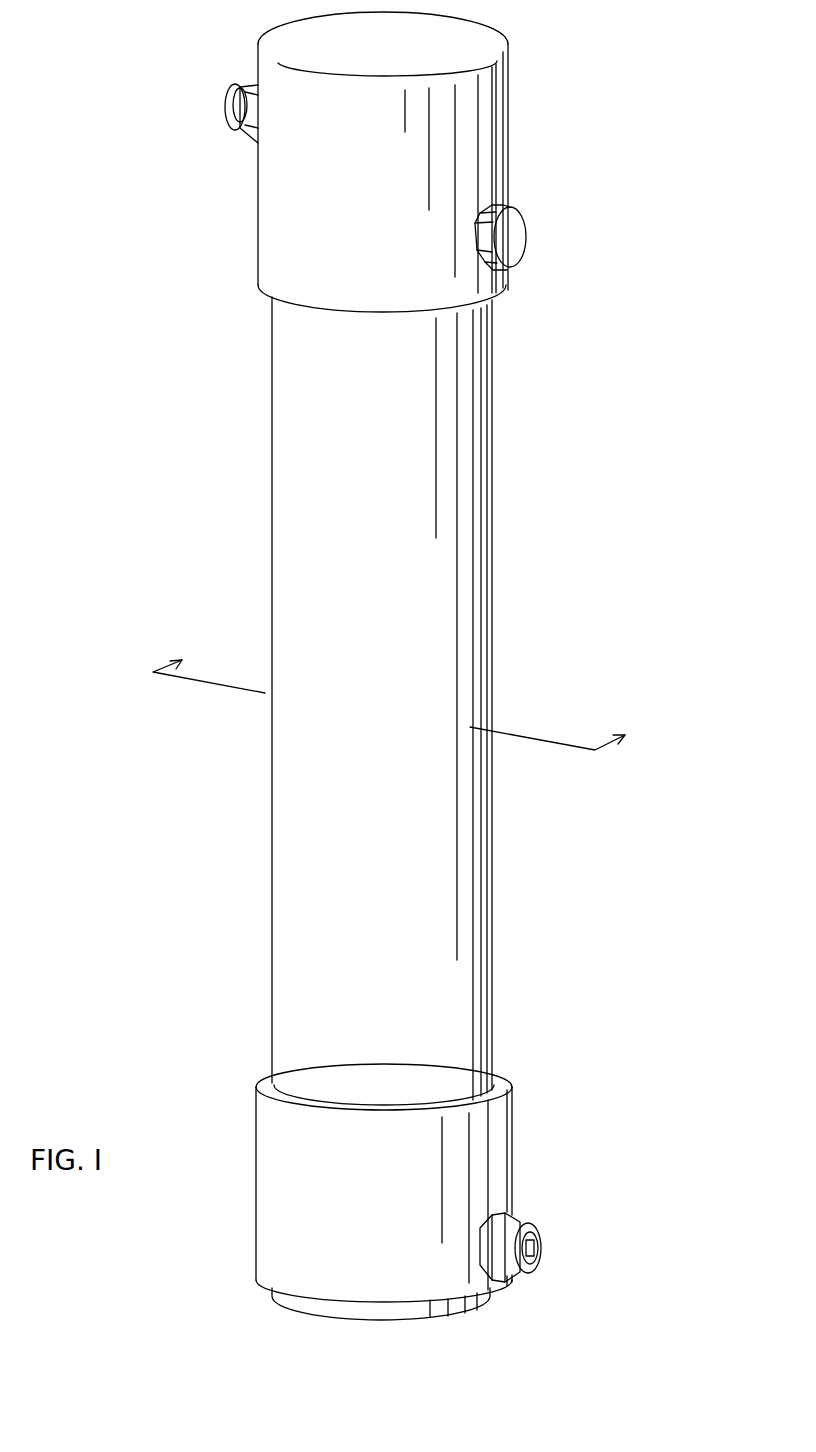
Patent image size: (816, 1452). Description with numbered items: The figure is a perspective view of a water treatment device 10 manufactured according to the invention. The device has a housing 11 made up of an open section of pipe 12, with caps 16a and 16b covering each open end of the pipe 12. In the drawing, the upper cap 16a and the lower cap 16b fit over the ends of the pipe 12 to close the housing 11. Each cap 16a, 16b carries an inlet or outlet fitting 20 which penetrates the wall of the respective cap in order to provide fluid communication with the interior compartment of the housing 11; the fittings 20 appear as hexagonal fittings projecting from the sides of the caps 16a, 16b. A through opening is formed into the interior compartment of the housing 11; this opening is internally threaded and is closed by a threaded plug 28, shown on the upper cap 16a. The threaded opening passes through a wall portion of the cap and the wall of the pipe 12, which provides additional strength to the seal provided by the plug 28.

The water treatment device 10 is at (512, 43).
The housing 11 is at (494, 458).
The pipe 12 is at (489, 535).
The cap 16a is at (509, 137).
The cap 16b is at (510, 1097).
The inlet or outlet fitting 20 is at (232, 92).
The threaded plug 28 is at (527, 237).